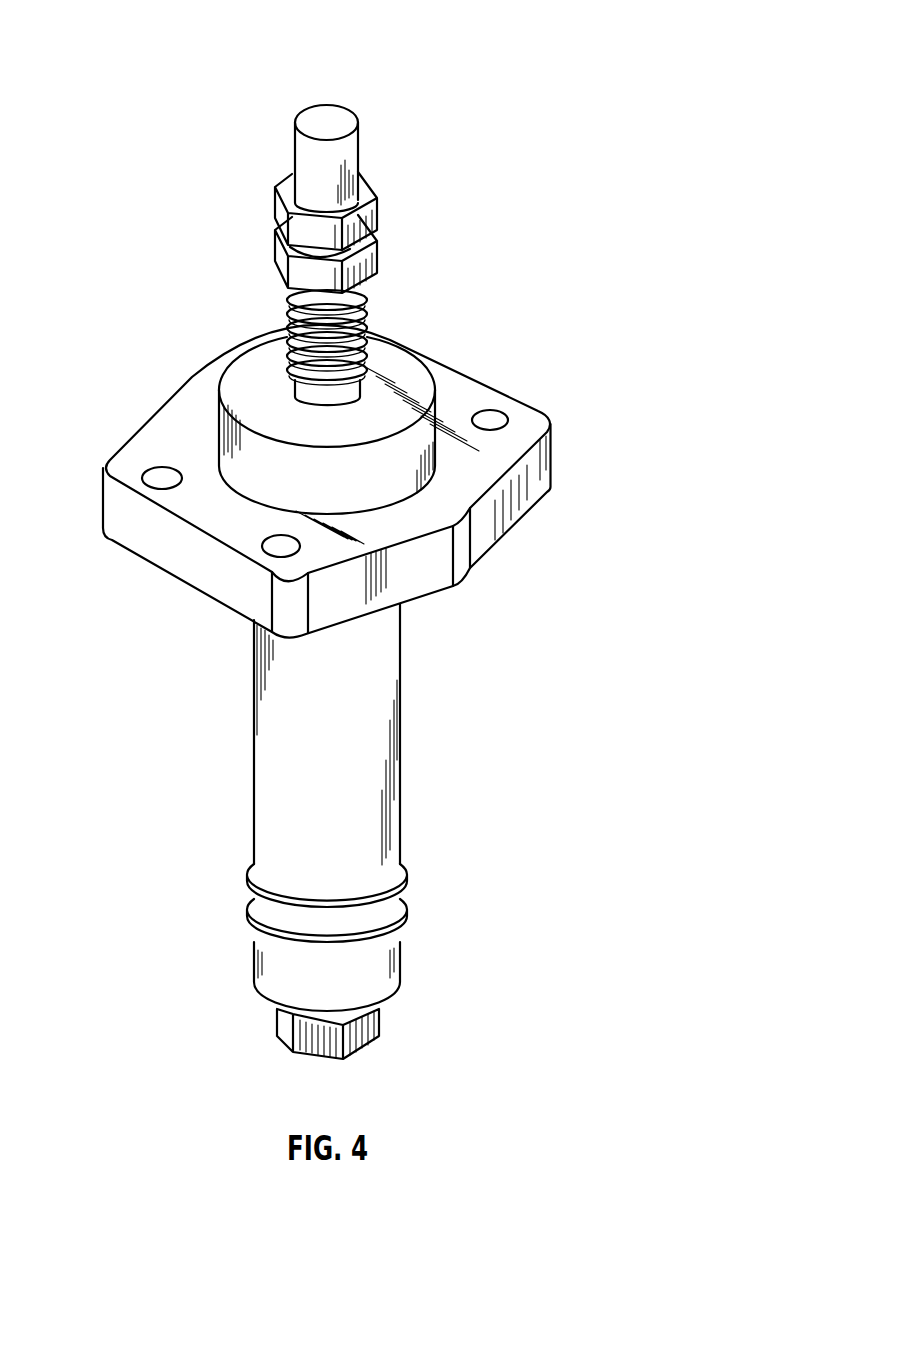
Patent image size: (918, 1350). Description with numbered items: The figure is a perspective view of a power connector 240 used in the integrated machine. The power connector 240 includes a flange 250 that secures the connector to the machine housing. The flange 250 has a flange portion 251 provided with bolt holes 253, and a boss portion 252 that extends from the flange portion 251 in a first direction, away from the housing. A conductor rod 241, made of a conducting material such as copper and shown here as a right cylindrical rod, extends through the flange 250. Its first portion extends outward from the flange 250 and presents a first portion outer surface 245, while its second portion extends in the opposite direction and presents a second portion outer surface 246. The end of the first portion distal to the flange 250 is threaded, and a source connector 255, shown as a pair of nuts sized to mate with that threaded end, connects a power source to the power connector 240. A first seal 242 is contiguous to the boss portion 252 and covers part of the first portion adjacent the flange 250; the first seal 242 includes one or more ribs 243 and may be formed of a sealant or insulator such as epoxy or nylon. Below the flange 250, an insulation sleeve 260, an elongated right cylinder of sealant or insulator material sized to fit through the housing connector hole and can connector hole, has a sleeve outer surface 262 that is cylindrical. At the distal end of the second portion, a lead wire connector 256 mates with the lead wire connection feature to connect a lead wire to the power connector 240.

The power connector 240 is at (490, 55).
The first portion outer surface 245 is at (293, 160).
The conductor rod 241 is at (350, 145).
The source connector 255 is at (370, 218).
The first seal 242 is at (373, 325).
The ribs 243 is at (287, 330).
The flange 250 is at (557, 370).
The flange portion 251 is at (518, 438).
The boss portion 252 is at (397, 385).
The bolt holes 253 is at (160, 472).
The sleeve outer surface 262 is at (404, 704).
The insulation sleeve 260 is at (372, 769).
The second portion outer surface 246 is at (404, 892).
The lead wire connector 256 is at (363, 1032).